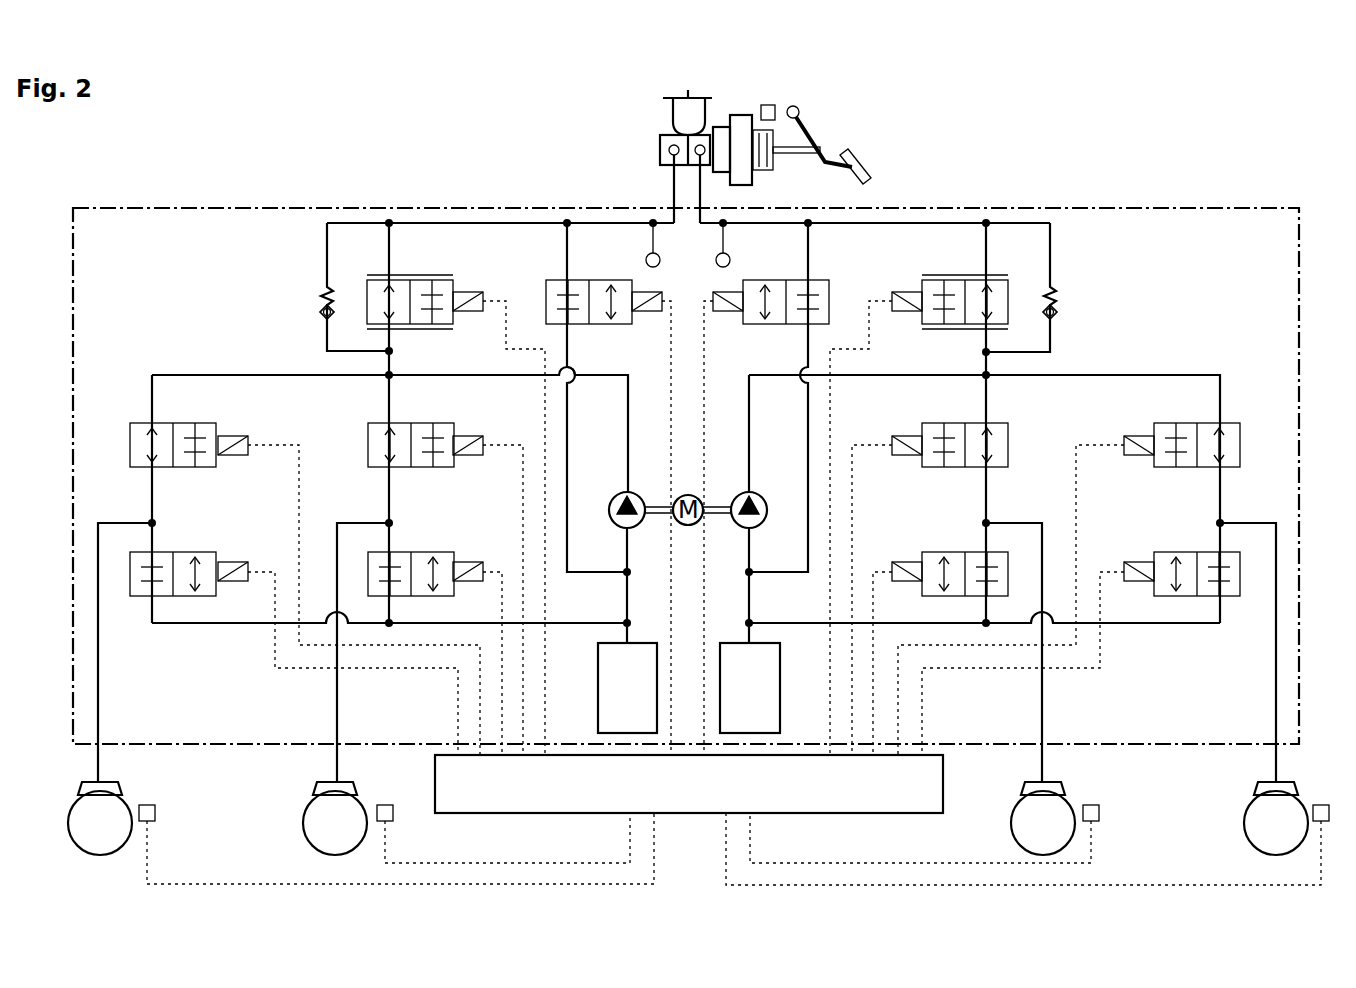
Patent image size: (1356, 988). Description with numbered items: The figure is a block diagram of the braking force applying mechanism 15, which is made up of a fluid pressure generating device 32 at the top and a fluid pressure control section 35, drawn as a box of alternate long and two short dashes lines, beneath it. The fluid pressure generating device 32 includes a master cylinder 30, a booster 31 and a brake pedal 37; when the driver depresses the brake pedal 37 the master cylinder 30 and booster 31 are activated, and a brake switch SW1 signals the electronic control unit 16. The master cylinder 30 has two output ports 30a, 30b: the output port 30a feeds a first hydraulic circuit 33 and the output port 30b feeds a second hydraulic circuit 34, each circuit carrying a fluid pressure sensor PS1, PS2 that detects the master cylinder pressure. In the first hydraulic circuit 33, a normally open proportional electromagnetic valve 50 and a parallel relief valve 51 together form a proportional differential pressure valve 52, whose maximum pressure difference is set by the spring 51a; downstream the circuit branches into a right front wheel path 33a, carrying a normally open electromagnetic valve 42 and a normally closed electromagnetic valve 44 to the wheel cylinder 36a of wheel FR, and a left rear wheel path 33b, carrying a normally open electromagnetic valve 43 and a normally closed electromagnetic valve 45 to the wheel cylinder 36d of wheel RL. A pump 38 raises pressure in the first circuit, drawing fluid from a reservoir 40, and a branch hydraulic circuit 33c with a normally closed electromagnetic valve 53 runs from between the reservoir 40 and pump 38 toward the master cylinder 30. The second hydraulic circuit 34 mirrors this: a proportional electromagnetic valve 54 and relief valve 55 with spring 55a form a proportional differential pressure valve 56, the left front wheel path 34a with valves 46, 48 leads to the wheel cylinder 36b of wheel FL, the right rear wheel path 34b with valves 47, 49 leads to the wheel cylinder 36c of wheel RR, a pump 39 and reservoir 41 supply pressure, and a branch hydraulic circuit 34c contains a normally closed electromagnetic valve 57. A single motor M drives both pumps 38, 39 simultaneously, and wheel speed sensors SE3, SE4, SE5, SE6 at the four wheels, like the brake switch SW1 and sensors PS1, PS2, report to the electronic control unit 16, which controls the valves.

The braking force applying mechanism 15 is at (1264, 192).
The electronic control unit 16 is at (690, 815).
The master cylinder 30 is at (660, 138).
The output port 30a is at (669, 151).
The output port 30b is at (705, 151).
The booster 31 is at (741, 120).
The fluid pressure generating device 32 is at (643, 97).
The first hydraulic circuit 33 is at (505, 223).
The right front wheel path 33a is at (392, 396).
The left rear wheel path 33b is at (272, 375).
The branch hydraulic circuit 33c is at (567, 510).
The second hydraulic circuit 34 is at (870, 223).
The left front wheel path 34a is at (989, 396).
The right rear wheel path 34b is at (1102, 375).
The branch hydraulic circuit 34c is at (808, 510).
The fluid pressure control section 35 is at (1175, 208).
The wheel cylinder 36a is at (320, 786).
The wheel cylinder 36b is at (1060, 786).
The wheel cylinder 36c is at (1258, 786).
The wheel cylinder 36d is at (118, 786).
The brake pedal 37 is at (868, 163).
The pump 38 is at (617, 498).
The pump 39 is at (759, 498).
The reservoir 40 is at (638, 643).
The reservoir 41 is at (735, 643).
The normally open electromagnetic valve 42 is at (442, 423).
The normally open electromagnetic valve 43 is at (184, 423).
The normally closed electromagnetic valve 44 is at (437, 552).
The normally closed electromagnetic valve 45 is at (205, 552).
The normally open electromagnetic valve 46 is at (952, 423).
The normally open electromagnetic valve 47 is at (1183, 423).
The normally closed electromagnetic valve 48 is at (957, 552).
The normally closed electromagnetic valve 49 is at (1183, 552).
The normally open proportional electromagnetic valve 50 is at (386, 275).
The relief valve 51 is at (327, 287).
The spring 51a is at (321, 305).
The proportional differential pressure valve 52 is at (383, 165).
The normally closed electromagnetic valve 53 is at (600, 324).
The normally open proportional electromagnetic valve 54 is at (992, 275).
The relief valve 55 is at (1050, 287).
The spring 55a is at (1056, 305).
The proportional differential pressure valve 56 is at (1090, 165).
The normally closed electromagnetic valve 57 is at (775, 324).
The brake switch SW1 is at (768, 105).
The fluid pressure sensor PS1 is at (645, 262).
The fluid pressure sensor PS2 is at (731, 262).
The wheel speed sensor SE3 is at (385, 805).
The wheel speed sensor SE4 is at (1100, 813).
The wheel speed sensor SE5 is at (1321, 805).
The wheel speed sensor SE6 is at (157, 813).